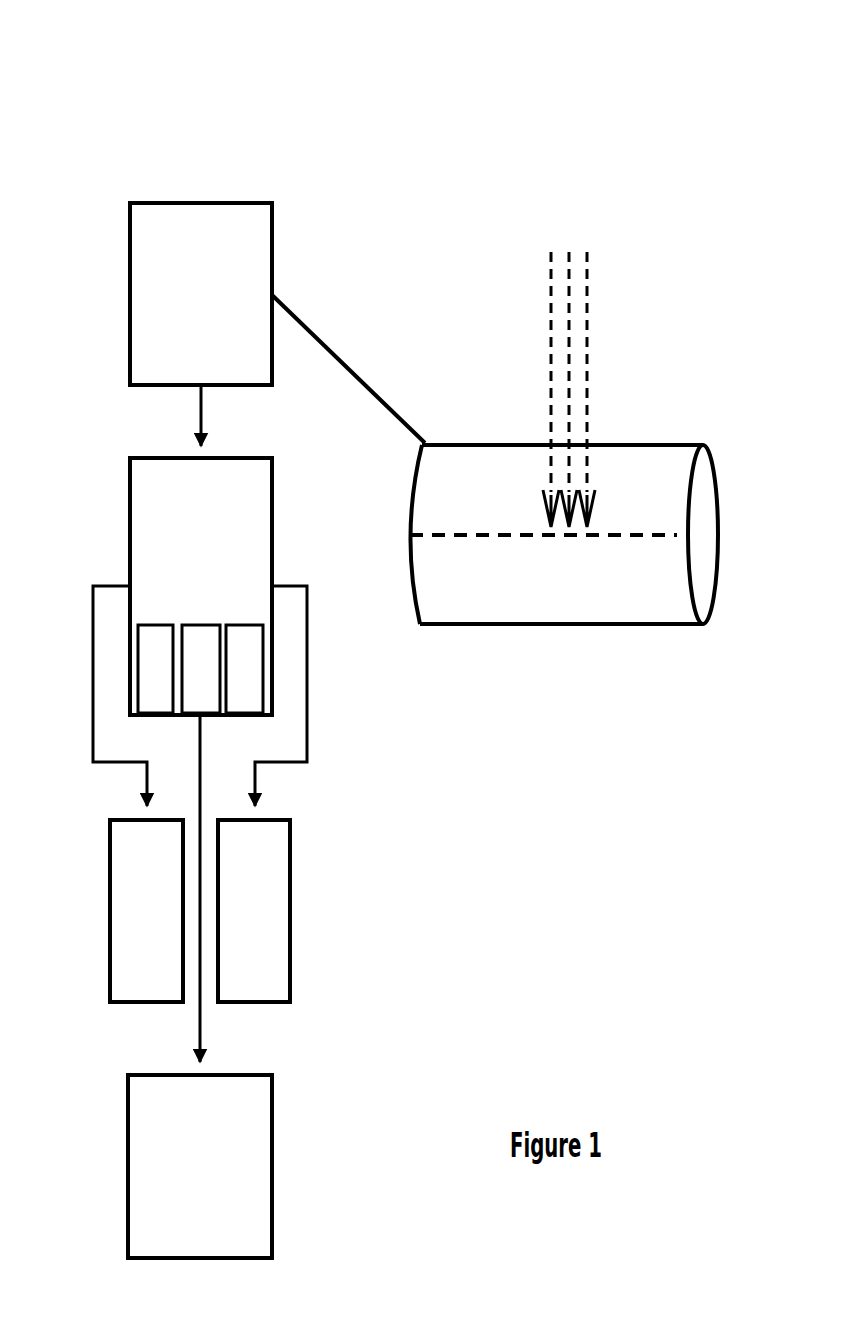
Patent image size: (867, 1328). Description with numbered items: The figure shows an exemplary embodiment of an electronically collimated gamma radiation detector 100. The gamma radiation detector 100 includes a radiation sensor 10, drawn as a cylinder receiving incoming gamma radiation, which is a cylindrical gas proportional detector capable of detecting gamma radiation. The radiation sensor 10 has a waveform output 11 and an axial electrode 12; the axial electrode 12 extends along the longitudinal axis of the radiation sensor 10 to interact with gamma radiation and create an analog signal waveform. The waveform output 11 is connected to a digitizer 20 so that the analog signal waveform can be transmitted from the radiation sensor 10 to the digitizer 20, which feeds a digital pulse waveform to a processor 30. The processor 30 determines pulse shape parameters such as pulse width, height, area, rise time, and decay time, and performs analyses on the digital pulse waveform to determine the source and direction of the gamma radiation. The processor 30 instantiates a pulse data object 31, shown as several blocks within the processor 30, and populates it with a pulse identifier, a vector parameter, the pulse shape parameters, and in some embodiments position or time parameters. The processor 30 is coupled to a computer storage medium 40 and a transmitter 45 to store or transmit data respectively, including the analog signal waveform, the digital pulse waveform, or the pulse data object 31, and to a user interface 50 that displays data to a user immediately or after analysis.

The gamma radiation detector 100 is at (112, 86).
The radiation sensor 10 is at (323, 196).
The waveform output 11 is at (343, 360).
The axial electrode 12 is at (465, 537).
The digitizer 20 is at (201, 324).
The processor 30 is at (200, 760).
The pulse data object 31 is at (200, 669).
The computer storage medium 40 is at (146, 911).
The transmitter 45 is at (254, 911).
The user interface 50 is at (200, 1166).